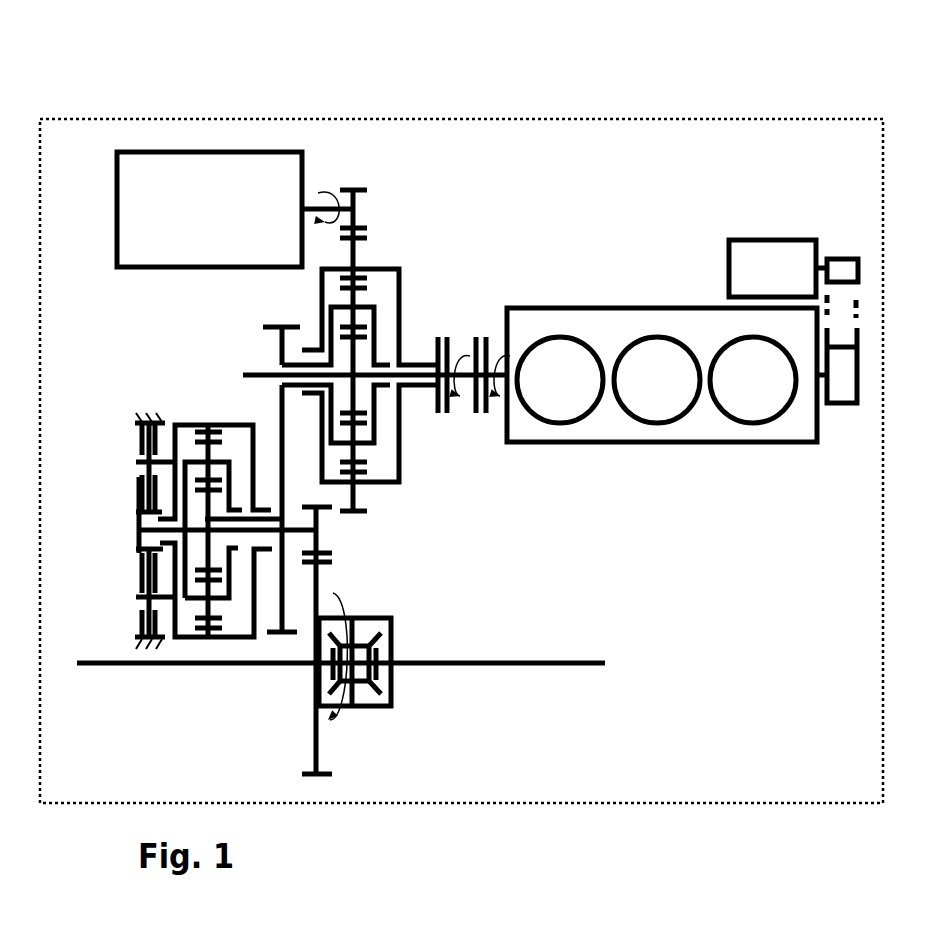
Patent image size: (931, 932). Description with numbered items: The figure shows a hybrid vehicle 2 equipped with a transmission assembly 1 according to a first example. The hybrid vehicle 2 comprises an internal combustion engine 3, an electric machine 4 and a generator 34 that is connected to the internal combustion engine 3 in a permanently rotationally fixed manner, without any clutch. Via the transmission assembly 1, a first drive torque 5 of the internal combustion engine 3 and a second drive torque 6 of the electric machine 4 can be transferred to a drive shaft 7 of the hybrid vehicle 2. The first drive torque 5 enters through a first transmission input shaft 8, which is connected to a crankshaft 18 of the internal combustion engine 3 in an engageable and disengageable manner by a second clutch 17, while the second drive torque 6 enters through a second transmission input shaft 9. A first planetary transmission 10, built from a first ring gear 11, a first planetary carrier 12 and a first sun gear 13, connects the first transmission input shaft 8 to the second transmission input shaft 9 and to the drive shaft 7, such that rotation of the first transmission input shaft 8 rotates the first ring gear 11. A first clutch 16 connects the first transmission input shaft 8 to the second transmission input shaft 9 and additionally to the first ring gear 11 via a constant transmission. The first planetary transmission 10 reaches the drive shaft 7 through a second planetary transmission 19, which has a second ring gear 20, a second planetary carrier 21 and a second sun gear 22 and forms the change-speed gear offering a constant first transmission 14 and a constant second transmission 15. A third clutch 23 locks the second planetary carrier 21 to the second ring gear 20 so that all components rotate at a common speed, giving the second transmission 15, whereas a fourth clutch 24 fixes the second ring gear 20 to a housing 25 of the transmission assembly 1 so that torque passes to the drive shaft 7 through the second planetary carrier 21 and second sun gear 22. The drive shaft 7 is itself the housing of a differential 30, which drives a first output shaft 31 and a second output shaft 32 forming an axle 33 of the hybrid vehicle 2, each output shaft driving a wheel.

The transmission assembly 1 is at (500, 253).
The hybrid vehicle 2 is at (370, 118).
The internal combustion engine 3 is at (715, 432).
The electric machine 4 is at (177, 173).
The first drive torque 5 is at (484, 362).
The second drive torque 6 is at (321, 225).
The drive shaft 7 is at (320, 575).
The first transmission input shaft 8 is at (428, 413).
The second transmission input shaft 9 is at (313, 207).
The first planetary transmission 10 is at (412, 231).
The first ring gear 11 is at (358, 350).
The first planetary carrier 12 is at (282, 348).
The first sun gear 13 is at (375, 335).
The first transmission 14 is at (128, 470).
The second transmission 15 is at (130, 431).
The first clutch 16 is at (440, 337).
The second clutch 17 is at (478, 413).
The crankshaft 18 is at (486, 337).
The second planetary transmission 19 is at (202, 407).
The second ring gear 20 is at (193, 640).
The second planetary carrier 21 is at (228, 600).
The second sun gear 22 is at (277, 598).
The third clutch 23 is at (140, 571).
The fourth clutch 24 is at (140, 630).
The housing 25 is at (142, 640).
The differential 30 is at (412, 607).
The first output shaft 31 is at (490, 658).
The second output shaft 32 is at (80, 667).
The axle 33 is at (412, 716).
The generator 34 is at (742, 262).